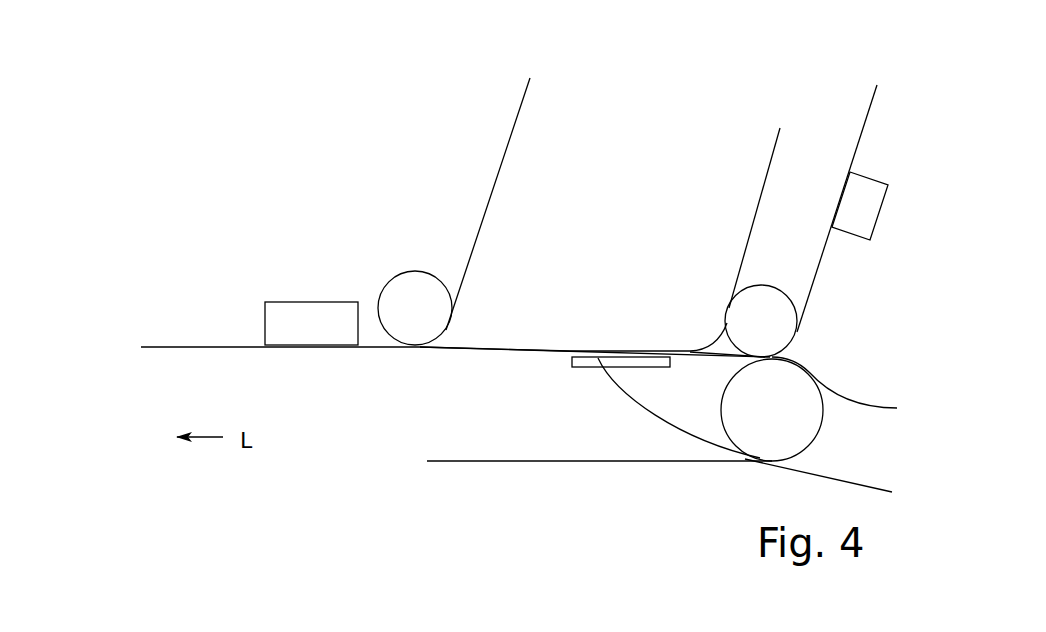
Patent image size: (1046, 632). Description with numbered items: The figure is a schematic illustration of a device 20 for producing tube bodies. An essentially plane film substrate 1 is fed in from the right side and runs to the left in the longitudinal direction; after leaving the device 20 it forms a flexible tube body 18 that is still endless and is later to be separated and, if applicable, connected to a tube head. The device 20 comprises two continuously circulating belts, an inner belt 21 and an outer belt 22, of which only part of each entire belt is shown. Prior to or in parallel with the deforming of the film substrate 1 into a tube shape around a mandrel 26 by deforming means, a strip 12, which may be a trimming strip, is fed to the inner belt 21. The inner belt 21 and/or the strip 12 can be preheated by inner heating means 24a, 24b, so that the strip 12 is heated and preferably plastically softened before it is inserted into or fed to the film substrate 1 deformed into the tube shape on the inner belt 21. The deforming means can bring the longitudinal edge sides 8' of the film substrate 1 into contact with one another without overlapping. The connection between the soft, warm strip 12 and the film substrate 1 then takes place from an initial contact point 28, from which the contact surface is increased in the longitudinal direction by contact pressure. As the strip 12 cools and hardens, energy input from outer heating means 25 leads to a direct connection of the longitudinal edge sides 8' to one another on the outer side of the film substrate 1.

The film substrate 1 is at (895, 473).
The longitudinal edge sides 8' is at (732, 404).
The strip 12 is at (767, 188).
The tube body 18 is at (150, 410).
The device 20 is at (193, 338).
The inner belt 21 is at (808, 292).
The outer belt 22 is at (327, 350).
The inner heating means 24a is at (655, 357).
The inner heating means 24b is at (847, 200).
The outer heating means 25 is at (323, 318).
The mandrel 26 is at (765, 435).
The initial contact point 28 is at (496, 352).